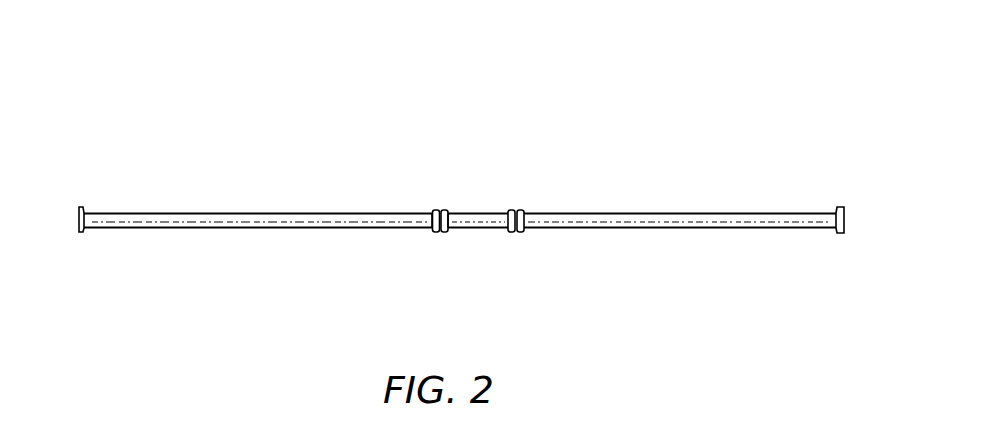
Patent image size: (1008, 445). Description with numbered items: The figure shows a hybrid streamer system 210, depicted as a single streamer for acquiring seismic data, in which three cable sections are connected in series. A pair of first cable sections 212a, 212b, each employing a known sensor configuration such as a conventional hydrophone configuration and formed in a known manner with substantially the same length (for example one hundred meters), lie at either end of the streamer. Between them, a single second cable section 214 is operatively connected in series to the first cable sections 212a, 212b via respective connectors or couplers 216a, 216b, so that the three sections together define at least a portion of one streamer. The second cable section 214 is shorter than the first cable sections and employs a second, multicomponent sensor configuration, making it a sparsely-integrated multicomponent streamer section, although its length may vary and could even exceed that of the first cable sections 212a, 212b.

The hybrid streamer system 210 is at (715, 70).
The first cable section 212a is at (270, 214).
The first cable section 212b is at (765, 213).
The second cable section 214 is at (478, 230).
The connector or coupler 216a is at (435, 230).
The connector or coupler 216b is at (515, 212).